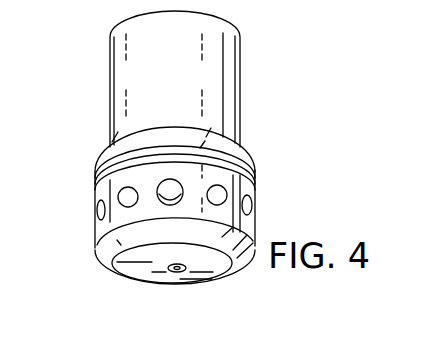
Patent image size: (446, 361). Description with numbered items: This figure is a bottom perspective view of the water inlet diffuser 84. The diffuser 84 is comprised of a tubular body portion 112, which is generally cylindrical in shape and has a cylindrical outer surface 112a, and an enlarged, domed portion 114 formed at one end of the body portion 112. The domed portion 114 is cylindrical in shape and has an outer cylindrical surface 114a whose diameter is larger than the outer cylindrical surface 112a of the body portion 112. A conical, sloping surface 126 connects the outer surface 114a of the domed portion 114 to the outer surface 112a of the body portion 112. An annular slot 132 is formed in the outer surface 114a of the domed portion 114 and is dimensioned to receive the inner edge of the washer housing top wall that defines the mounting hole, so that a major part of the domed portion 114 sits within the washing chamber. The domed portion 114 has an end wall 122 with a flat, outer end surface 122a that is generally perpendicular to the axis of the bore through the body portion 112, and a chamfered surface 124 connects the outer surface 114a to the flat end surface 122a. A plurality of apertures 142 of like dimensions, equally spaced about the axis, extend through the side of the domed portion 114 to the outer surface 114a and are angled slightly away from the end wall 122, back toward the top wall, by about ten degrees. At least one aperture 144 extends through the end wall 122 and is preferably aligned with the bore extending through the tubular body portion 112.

The diffuser 84 is at (268, 142).
The tubular body portion 112 is at (244, 65).
The cylindrical outer surface 112a is at (133, 77).
The domed portion 114 is at (262, 222).
The outer cylindrical surface 114a is at (258, 186).
The end wall 122 is at (135, 272).
The flat outer end surface 122a is at (198, 283).
The chamfered surface 124 is at (240, 258).
The conical sloping surface 126 is at (240, 116).
The annular slot 132 is at (115, 158).
The apertures 142 is at (126, 206).
The aperture 144 is at (177, 272).